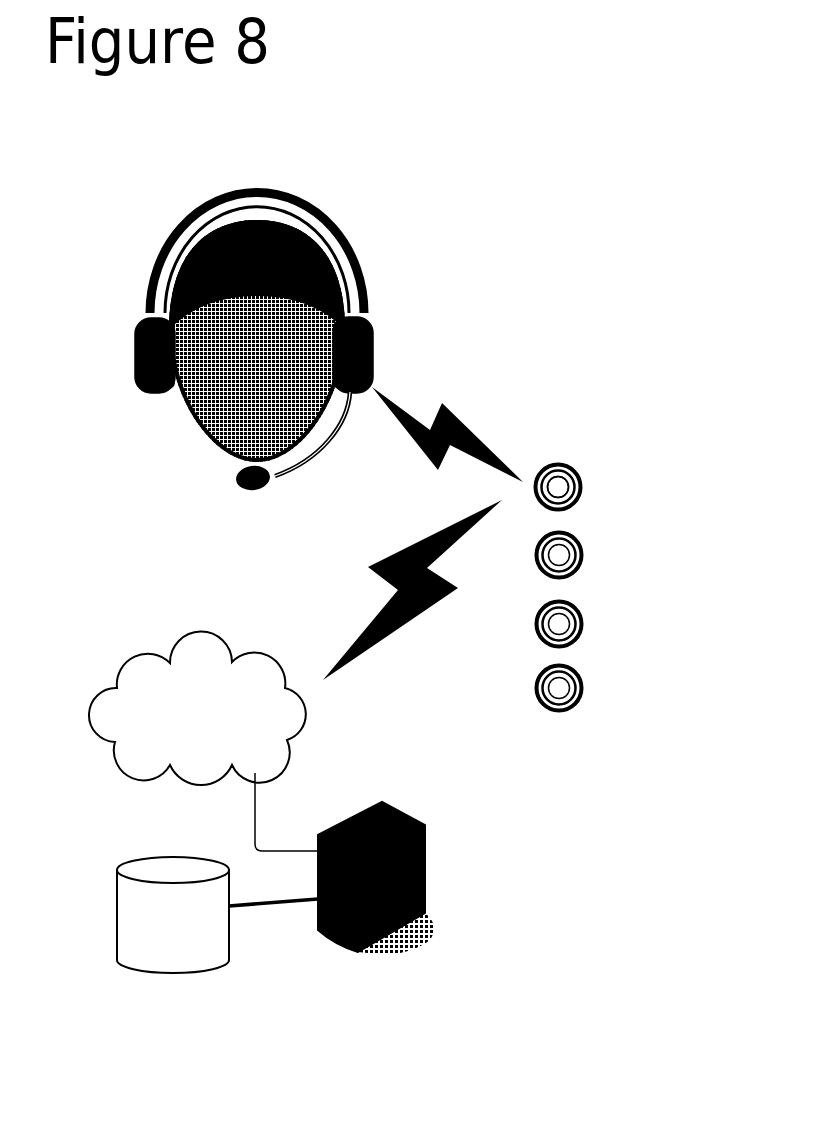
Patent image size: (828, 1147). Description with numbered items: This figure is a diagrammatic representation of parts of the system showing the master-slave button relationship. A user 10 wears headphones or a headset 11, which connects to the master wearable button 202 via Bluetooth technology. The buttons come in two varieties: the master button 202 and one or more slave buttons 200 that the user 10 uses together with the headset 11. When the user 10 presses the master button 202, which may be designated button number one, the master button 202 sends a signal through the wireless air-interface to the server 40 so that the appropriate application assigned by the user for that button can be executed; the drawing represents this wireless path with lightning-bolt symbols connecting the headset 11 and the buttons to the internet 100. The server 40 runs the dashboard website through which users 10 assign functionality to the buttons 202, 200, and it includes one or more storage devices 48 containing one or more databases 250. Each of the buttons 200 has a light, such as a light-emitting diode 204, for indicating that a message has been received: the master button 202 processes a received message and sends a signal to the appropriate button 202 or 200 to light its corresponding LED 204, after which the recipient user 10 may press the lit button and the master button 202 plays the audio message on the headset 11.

The user 10 is at (273, 386).
The headset 11 is at (252, 197).
The master button 202 is at (557, 463).
The light-emitting diode (LED) 204 is at (562, 482).
The slave buttons 200 is at (583, 555).
The internet 100 is at (223, 717).
The storage device 48 is at (151, 842).
The database 250 is at (193, 929).
The server 40 is at (407, 900).